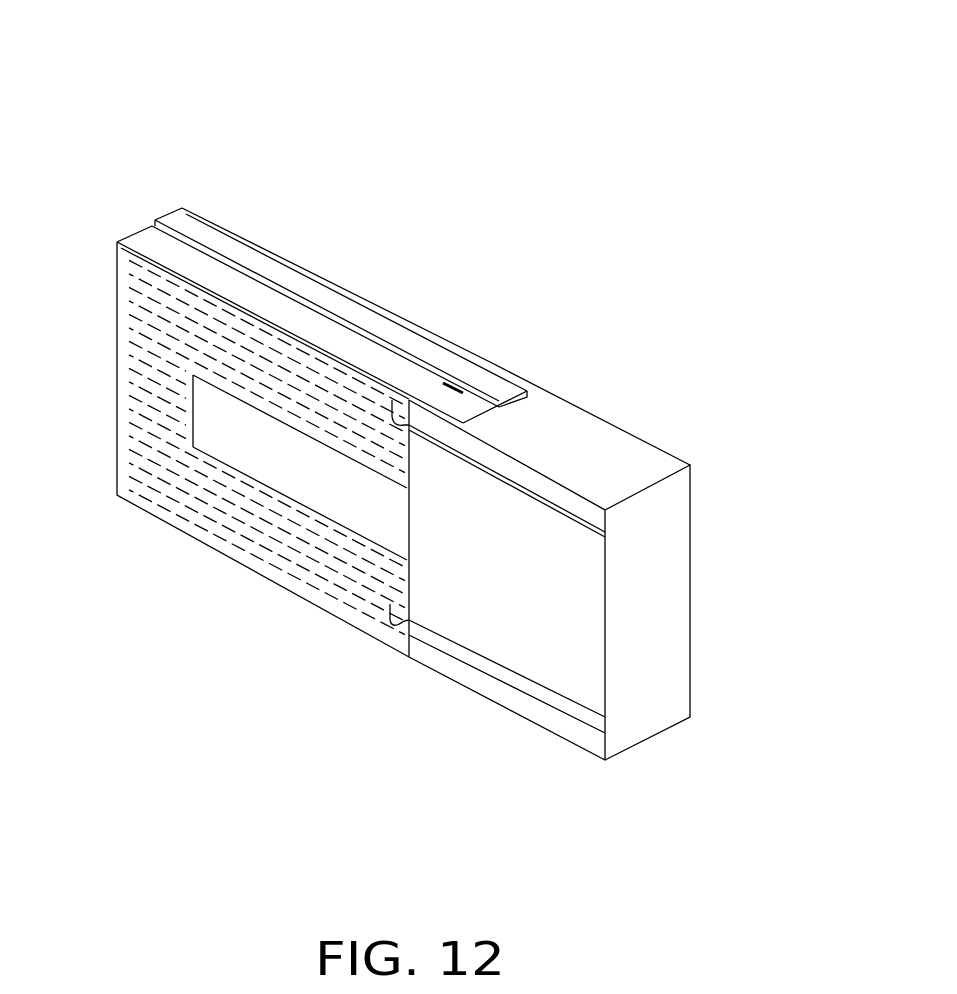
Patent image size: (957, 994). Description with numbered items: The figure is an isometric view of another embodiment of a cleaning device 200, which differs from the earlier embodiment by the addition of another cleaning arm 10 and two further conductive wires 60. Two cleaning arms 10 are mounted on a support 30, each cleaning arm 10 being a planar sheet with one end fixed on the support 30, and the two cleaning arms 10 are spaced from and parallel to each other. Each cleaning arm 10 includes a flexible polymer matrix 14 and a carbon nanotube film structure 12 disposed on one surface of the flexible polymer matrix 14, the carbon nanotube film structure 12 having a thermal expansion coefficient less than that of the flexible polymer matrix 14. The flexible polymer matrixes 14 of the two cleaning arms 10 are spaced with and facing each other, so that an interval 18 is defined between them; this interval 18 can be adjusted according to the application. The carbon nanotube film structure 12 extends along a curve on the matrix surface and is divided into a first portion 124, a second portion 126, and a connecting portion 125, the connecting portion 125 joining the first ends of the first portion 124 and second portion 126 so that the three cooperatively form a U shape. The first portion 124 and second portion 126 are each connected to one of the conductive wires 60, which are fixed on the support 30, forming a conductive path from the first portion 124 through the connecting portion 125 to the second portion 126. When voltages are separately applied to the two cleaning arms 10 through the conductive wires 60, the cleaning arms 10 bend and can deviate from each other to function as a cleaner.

The cleaning device 200 is at (477, 61).
The cleaning arm 10 is at (163, 212).
The carbon nanotube film structure 12 is at (116, 243).
The flexible polymer matrix 14 is at (180, 257).
The interval 18 is at (342, 327).
The support 30 is at (625, 462).
The conductive wires 60 is at (528, 688).
The first portion 124 is at (258, 548).
The connecting portion 125 is at (145, 385).
The second portion 126 is at (177, 310).